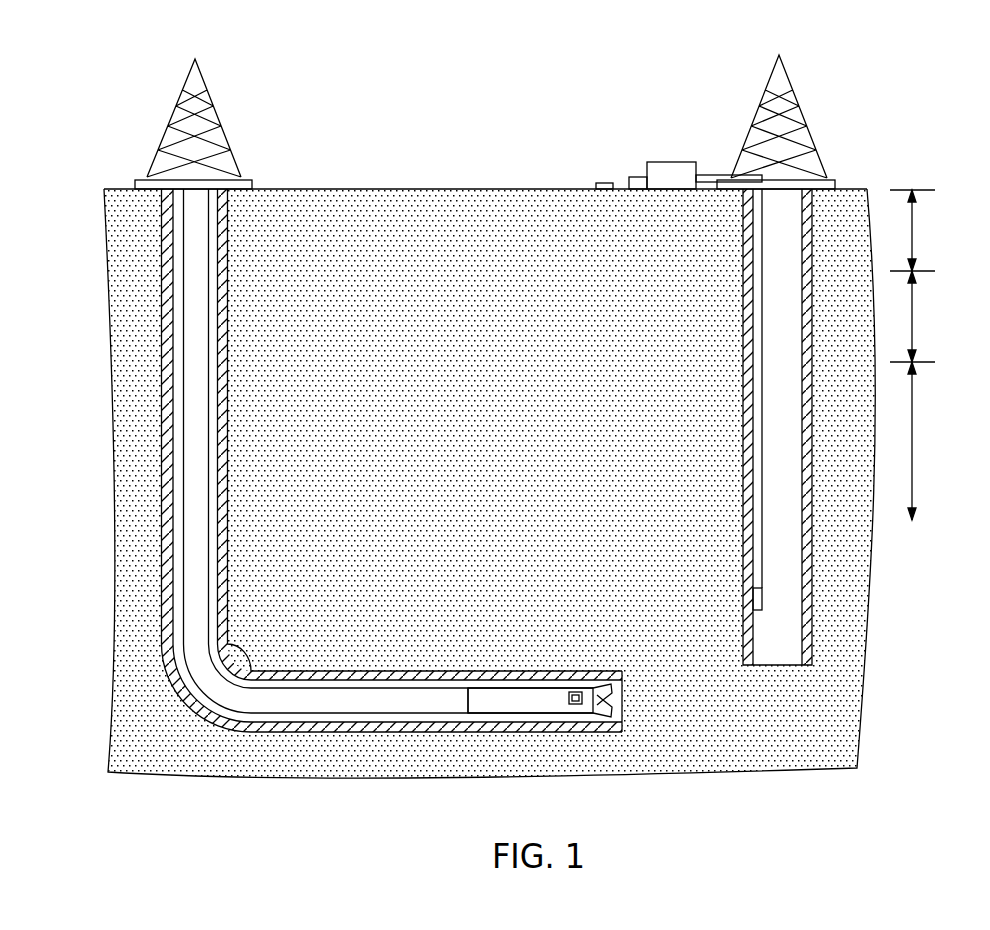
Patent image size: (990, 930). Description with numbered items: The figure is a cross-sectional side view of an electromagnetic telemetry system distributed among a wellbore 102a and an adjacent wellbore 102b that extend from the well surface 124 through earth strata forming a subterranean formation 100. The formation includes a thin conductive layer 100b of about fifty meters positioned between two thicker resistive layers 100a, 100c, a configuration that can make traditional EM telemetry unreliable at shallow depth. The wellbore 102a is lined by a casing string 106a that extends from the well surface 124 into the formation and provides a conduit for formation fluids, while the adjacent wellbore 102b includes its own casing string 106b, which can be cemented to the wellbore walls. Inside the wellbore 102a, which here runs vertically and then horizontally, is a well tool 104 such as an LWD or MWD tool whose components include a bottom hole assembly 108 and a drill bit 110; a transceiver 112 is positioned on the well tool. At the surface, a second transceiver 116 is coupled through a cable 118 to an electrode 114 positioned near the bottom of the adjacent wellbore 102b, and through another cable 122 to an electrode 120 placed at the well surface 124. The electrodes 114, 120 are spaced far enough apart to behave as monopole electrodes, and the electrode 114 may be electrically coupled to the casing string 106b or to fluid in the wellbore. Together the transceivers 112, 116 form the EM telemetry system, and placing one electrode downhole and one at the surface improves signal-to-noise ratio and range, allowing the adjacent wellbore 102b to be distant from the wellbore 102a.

The subterranean formation 100 is at (372, 213).
The resistive layer 100a is at (912, 235).
The conductive layer 100b is at (912, 322).
The resistive layer 100c is at (912, 425).
The wellbore 102a is at (213, 203).
The adjacent wellbore 102b is at (790, 203).
The well tool 104 is at (375, 700).
The casing string 106a is at (440, 672).
The casing string 106b is at (812, 603).
The bottom hole assembly 108 is at (522, 692).
The drill bit 110 is at (614, 700).
The transceiver 112 is at (575, 706).
The electrode 114 is at (753, 603).
The transceiver 116 is at (668, 162).
The cable 118 is at (752, 360).
The electrode 120 is at (605, 183).
The cable 122 is at (640, 177).
The well surface 124 is at (415, 189).